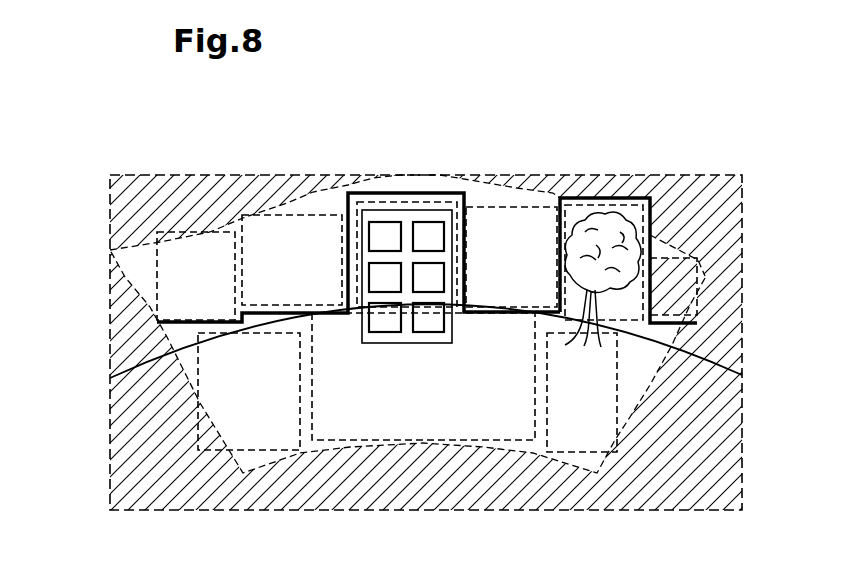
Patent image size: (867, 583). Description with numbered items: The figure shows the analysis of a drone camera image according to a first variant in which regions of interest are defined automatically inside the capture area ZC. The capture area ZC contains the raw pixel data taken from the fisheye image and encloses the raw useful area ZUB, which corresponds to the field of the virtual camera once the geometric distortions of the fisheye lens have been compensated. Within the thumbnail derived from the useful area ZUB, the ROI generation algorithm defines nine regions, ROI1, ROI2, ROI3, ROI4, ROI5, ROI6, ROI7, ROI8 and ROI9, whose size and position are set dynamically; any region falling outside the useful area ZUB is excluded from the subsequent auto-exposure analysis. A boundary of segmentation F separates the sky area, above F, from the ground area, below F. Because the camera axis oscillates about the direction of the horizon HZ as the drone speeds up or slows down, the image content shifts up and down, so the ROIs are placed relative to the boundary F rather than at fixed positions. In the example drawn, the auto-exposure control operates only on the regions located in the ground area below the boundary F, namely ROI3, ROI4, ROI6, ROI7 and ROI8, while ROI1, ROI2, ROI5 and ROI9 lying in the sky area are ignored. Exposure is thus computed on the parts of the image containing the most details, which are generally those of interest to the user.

The region of interest ROI1 is at (157, 243).
The region of interest ROI2 is at (310, 215).
The region of interest ROI3 is at (198, 427).
The region of interest ROI4 is at (422, 202).
The region of interest ROI5 is at (517, 207).
The region of interest ROI6 is at (517, 443).
The region of interest ROI7 is at (630, 205).
The region of interest ROI8 is at (617, 404).
The region of interest ROI9 is at (697, 270).
The useful area ZUB is at (217, 231).
The capture area ZC is at (603, 198).
The boundary of segmentation F is at (258, 313).
The horizon HZ is at (133, 366).